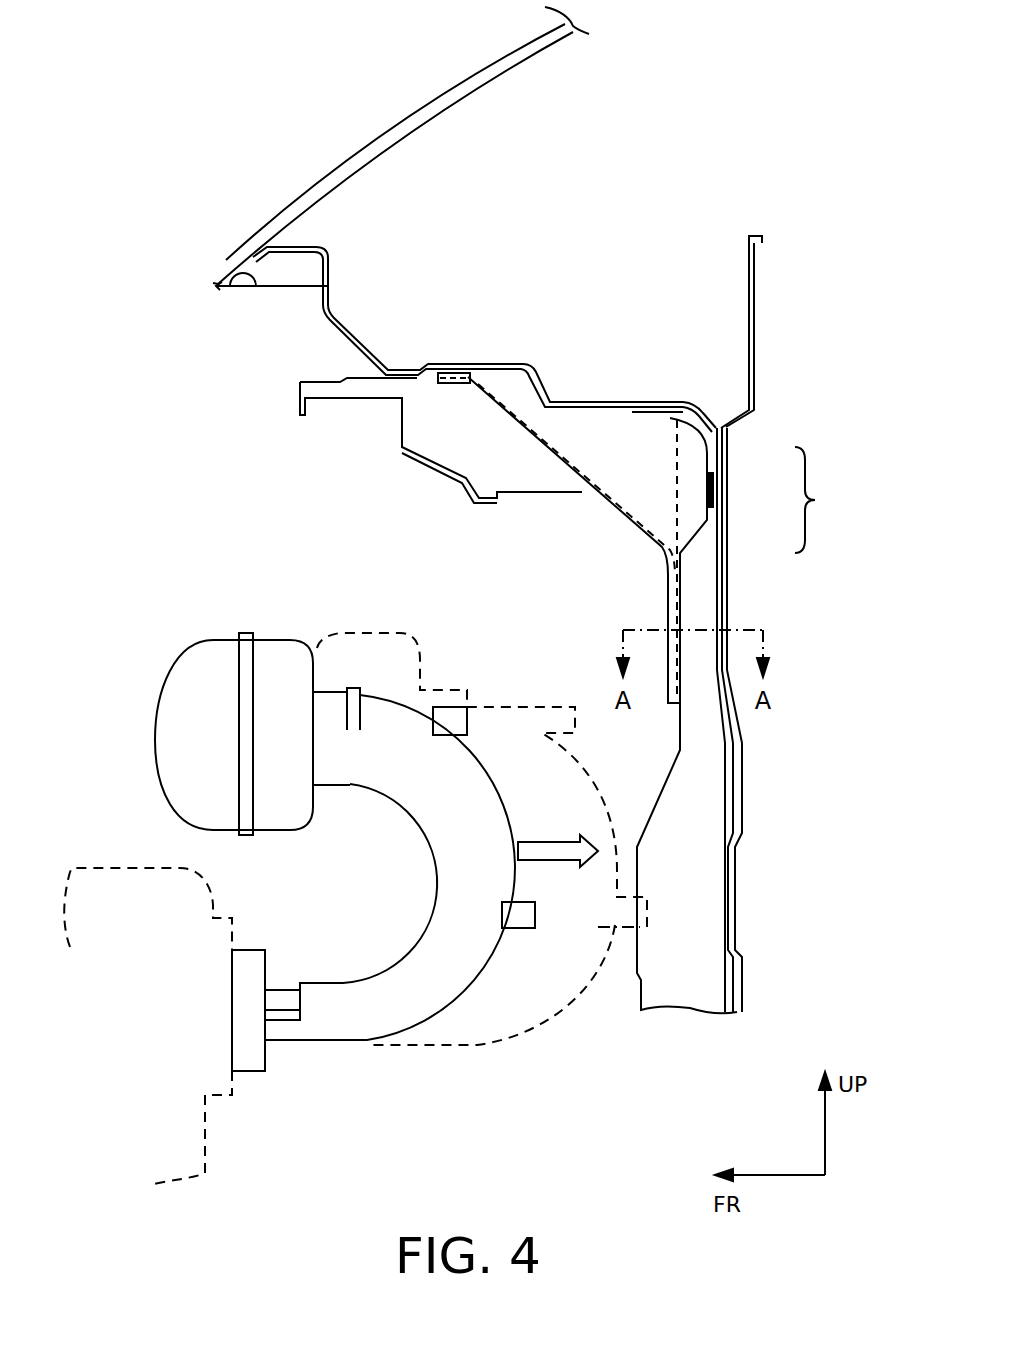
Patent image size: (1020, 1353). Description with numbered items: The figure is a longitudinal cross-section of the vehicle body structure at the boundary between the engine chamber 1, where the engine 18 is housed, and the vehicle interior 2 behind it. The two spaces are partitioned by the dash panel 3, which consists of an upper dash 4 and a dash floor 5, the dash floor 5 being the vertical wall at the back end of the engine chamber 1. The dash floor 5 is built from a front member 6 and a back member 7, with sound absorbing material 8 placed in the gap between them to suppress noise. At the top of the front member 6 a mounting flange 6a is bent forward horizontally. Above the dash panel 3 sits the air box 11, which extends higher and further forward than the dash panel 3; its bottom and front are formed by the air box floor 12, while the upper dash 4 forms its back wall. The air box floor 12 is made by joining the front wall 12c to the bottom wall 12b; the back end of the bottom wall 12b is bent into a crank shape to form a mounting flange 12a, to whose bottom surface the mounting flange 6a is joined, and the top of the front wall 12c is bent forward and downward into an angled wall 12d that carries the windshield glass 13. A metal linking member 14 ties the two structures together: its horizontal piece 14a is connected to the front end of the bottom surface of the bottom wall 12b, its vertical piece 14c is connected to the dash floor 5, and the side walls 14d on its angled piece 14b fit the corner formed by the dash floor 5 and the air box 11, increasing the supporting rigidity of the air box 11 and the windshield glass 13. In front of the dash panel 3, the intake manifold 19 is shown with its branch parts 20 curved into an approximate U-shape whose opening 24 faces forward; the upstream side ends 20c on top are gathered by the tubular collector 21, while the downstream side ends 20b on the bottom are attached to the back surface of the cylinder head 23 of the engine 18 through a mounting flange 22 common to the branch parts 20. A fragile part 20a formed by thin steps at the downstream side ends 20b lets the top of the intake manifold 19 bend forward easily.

The engine chamber 1 is at (310, 541).
The vehicle interior 2 is at (783, 364).
The dash panel 3 is at (776, 718).
The upper dash 4 is at (733, 425).
The dash floor 5 is at (727, 578).
The front member 6 is at (672, 712).
The mounting flange 6a is at (662, 422).
The back member 7 is at (742, 787).
The sound absorbing material 8 is at (733, 822).
The air box 11 is at (503, 236).
The air box floor 12 is at (466, 339).
The mounting flange 12a is at (620, 402).
The bottom wall 12b is at (481, 364).
The front wall 12c is at (341, 326).
The angled wall 12d is at (272, 299).
The windshield glass 13 is at (398, 140).
The linking member 14 is at (490, 558).
The horizontal piece 14a is at (453, 384).
The angled piece 14b is at (527, 443).
The vertical piece 14c is at (668, 697).
The side walls 14d is at (620, 523).
The engine 18 is at (148, 988).
The intake manifold 19 is at (367, 1045).
The branch parts 20 is at (400, 885).
The fragile part 20a is at (292, 990).
The downstream side ends 20b is at (312, 1047).
The upstream side ends 20c is at (375, 700).
The collector 21 is at (195, 650).
The mounting flange 22 is at (248, 1072).
The cylinder head 23 is at (145, 866).
The opening 24 is at (380, 891).